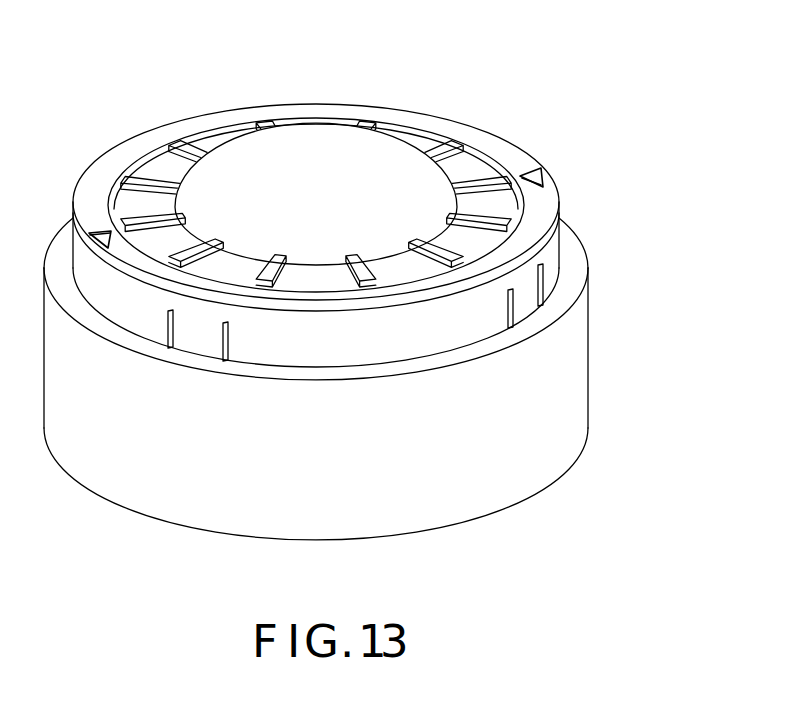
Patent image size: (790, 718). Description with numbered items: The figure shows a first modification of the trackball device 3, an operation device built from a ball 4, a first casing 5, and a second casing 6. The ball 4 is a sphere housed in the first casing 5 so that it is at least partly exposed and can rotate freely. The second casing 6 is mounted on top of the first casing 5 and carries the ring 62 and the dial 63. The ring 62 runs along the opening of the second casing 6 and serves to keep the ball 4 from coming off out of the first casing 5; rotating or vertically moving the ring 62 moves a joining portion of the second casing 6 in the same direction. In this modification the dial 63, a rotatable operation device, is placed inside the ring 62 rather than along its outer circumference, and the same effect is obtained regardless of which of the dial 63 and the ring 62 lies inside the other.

The trackball device 3 is at (585, 505).
The ball 4 is at (373, 175).
The first casing 5 is at (597, 245).
The second casing 6 is at (653, 95).
The ring 62 is at (548, 200).
The dial 63 is at (471, 167).